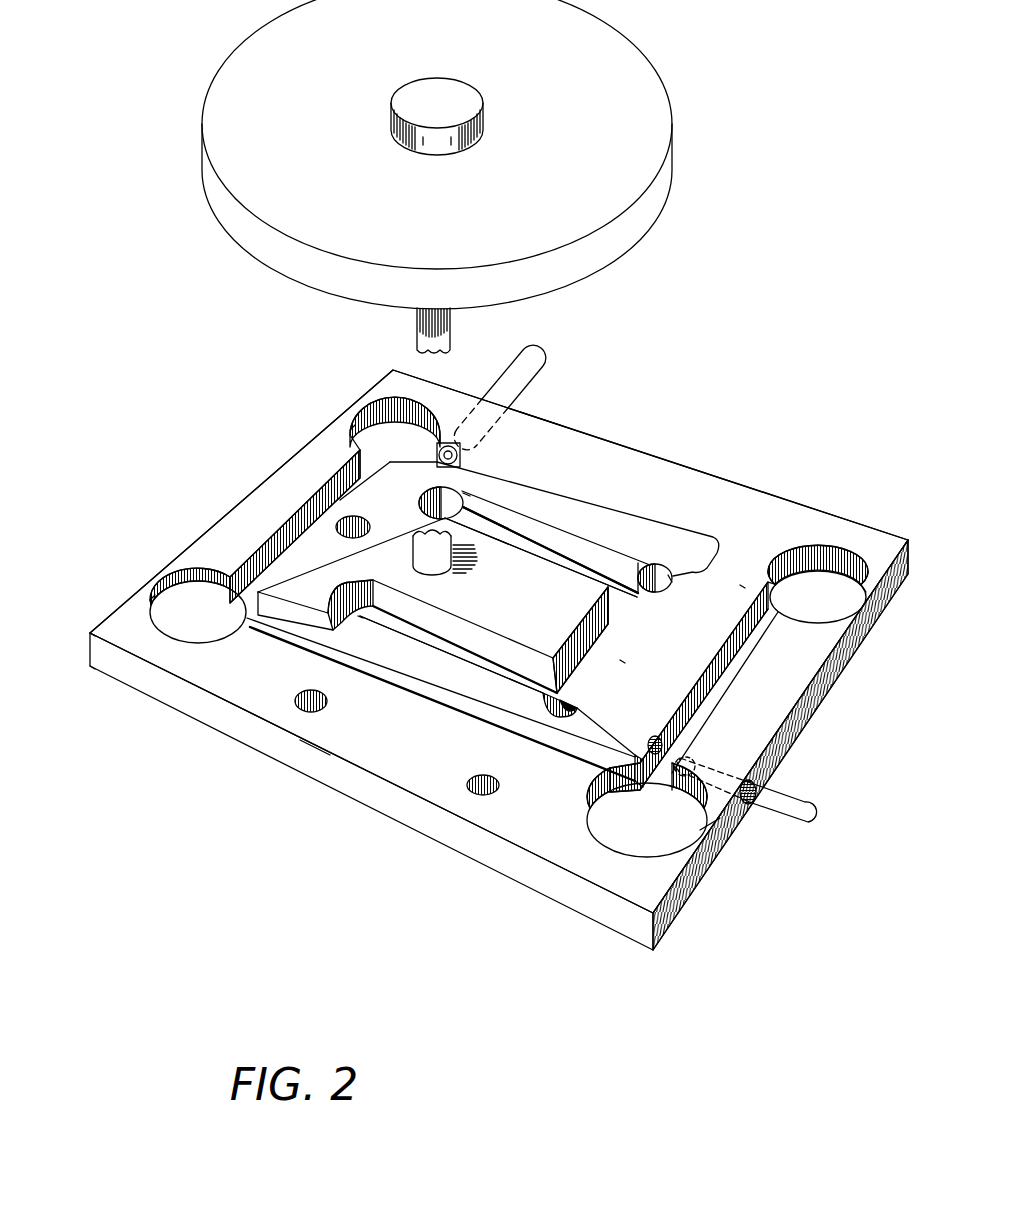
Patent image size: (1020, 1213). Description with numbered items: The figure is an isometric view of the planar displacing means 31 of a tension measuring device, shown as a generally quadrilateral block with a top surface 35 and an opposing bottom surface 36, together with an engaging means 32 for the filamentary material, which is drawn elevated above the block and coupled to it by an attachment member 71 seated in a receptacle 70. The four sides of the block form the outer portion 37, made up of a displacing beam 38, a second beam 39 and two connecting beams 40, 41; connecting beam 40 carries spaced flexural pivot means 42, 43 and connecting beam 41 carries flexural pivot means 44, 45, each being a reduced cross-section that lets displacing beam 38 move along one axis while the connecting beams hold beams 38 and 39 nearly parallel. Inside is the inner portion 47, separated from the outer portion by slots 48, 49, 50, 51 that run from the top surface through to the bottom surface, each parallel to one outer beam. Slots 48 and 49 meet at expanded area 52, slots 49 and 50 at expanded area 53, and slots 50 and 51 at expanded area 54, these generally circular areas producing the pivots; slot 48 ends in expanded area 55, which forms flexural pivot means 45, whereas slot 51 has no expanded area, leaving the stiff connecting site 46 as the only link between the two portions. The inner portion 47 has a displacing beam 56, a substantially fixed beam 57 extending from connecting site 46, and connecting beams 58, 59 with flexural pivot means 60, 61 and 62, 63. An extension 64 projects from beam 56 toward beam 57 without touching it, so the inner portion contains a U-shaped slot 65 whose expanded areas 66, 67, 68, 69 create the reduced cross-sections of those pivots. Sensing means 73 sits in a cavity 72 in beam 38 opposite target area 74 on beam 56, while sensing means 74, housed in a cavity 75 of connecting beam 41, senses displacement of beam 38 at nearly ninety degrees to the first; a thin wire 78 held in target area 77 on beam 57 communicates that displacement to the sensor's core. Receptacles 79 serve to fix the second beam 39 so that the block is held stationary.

The displacing means 31 is at (655, 955).
The engaging means 32 is at (610, 45).
The top surface 35 is at (88, 633).
The bottom surface 36 is at (85, 665).
The outer portion 37 is at (825, 510).
The displacing beam 38 is at (600, 447).
The second beam 39 is at (325, 742).
The connecting beam 40 is at (285, 475).
The connecting beam 41 is at (790, 690).
The flexural pivot means 42 is at (162, 575).
The flexural pivot means 43 is at (372, 405).
The flexural pivot means 44 is at (710, 832).
The flexural pivot means 45 is at (868, 598).
The connecting site 46 is at (733, 565).
The inner portion 47 is at (638, 657).
The slot 48 is at (748, 640).
The slot 49 is at (487, 718).
The slot 50 is at (300, 540).
The slot 51 is at (535, 478).
The expanded area 52 is at (647, 808).
The expanded area 53 is at (198, 605).
The expanded area 54 is at (395, 423).
The expanded area 55 is at (818, 584).
The displacing beam 56 is at (339, 528).
The substantially fixed beam 57 is at (685, 650).
The connecting beam 58 is at (450, 667).
The connecting beam 59 is at (573, 538).
The flexural pivot means 60 is at (335, 622).
The flexural pivot means 61 is at (547, 733).
The flexural pivot means 62 is at (660, 574).
The flexural pivot means 63 is at (455, 480).
The extension 64 is at (447, 605).
The U-shaped slot 65 is at (607, 628).
The expanded area 66 is at (360, 618).
The expanded area 67 is at (575, 698).
The expanded area 68 is at (670, 582).
The expanded area 69 is at (463, 487).
The receptacle 70 is at (352, 538).
The attachment member 71 is at (415, 320).
The cavity 72 is at (443, 443).
The sensing means 73 is at (520, 368).
The sensing means 74 is at (420, 465).
The cavity 75 is at (755, 800).
The target area 77 is at (650, 756).
The wire 78 is at (678, 772).
The receptacles 79 is at (297, 694).